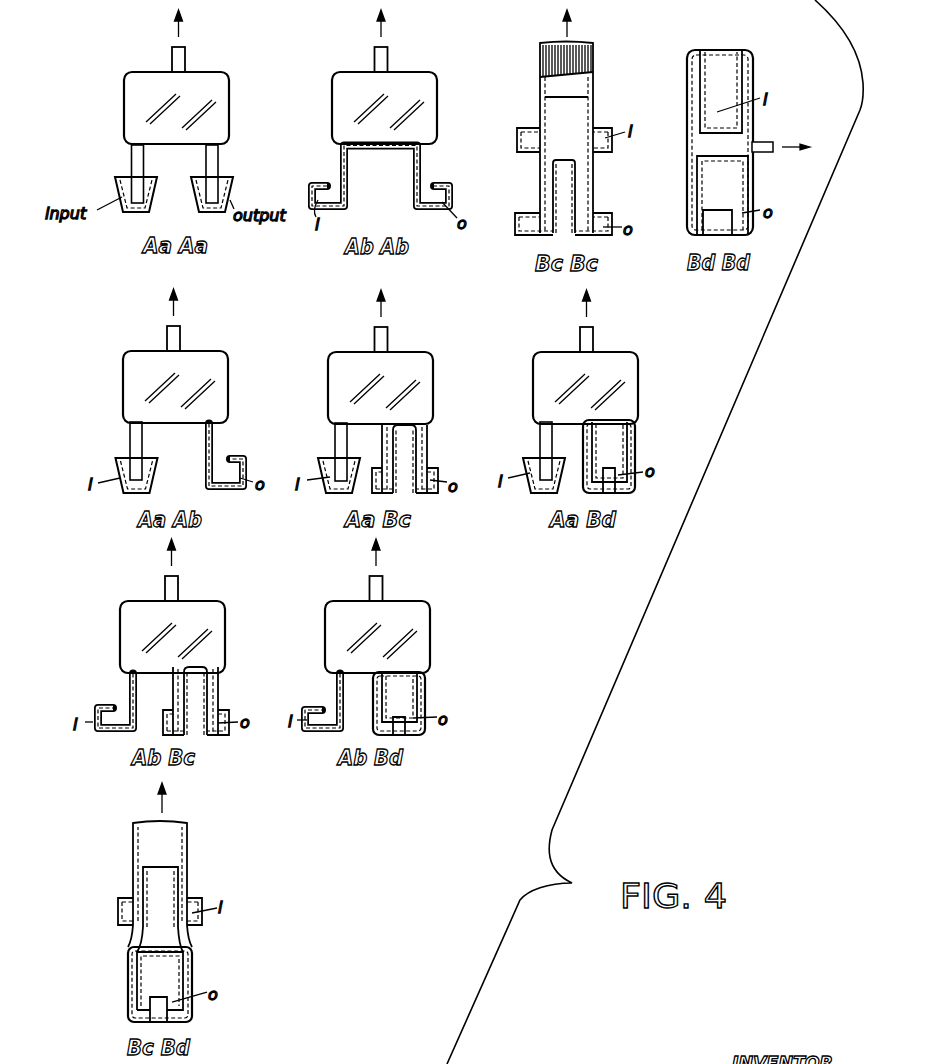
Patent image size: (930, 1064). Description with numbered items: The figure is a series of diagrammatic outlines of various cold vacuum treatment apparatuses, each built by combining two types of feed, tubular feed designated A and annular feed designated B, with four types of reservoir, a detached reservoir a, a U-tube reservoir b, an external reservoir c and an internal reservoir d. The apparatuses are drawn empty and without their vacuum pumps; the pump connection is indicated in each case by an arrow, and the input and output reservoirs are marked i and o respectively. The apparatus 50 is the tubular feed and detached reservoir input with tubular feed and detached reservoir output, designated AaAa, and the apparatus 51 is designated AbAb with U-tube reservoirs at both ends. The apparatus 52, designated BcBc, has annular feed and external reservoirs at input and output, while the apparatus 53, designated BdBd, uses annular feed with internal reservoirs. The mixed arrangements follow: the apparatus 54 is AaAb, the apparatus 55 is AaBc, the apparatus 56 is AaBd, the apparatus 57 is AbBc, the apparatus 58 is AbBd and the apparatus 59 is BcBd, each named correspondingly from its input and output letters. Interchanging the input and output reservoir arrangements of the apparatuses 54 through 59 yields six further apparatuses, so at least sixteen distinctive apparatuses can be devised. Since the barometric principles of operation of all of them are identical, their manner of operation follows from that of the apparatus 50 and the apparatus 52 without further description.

The apparatus AaAa 50 is at (135, 100).
The apparatus AbAb 51 is at (343, 105).
The apparatus BcBc 52 is at (577, 103).
The apparatus BdBd 53 is at (717, 185).
The apparatus AaAb 54 is at (143, 378).
The apparatus AaBc 55 is at (417, 390).
The apparatus AaBd 56 is at (623, 388).
The apparatus AbBc 57 is at (132, 632).
The apparatus AbBd 58 is at (417, 637).
The apparatus BcBd 59 is at (165, 880).